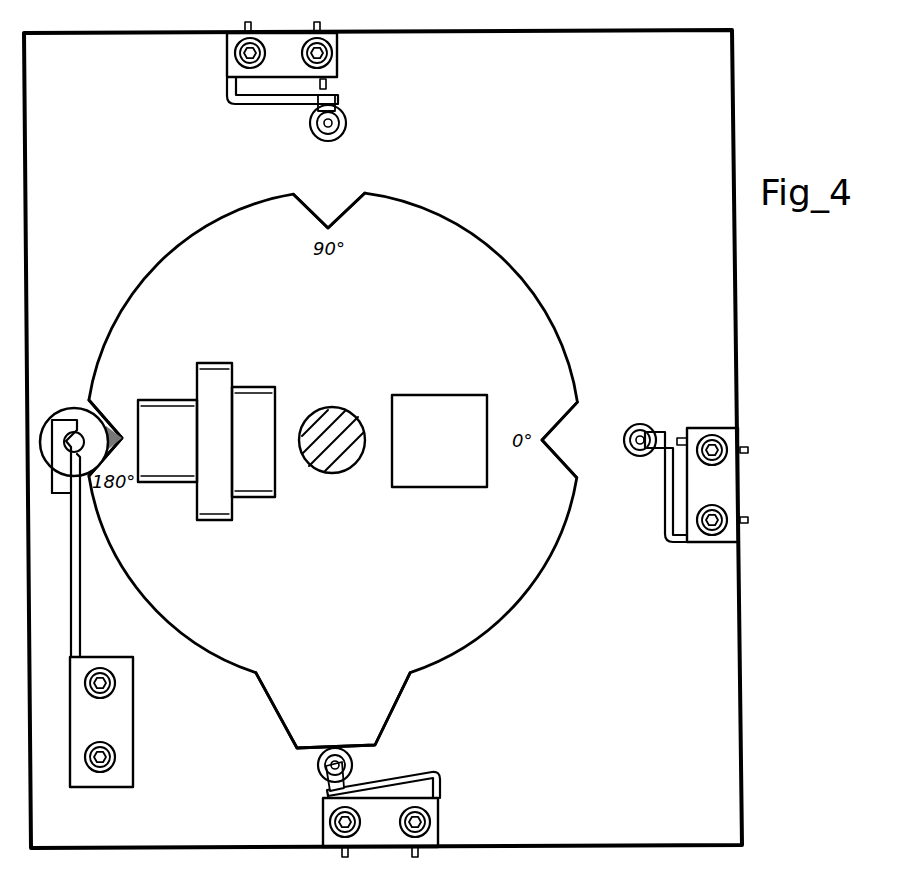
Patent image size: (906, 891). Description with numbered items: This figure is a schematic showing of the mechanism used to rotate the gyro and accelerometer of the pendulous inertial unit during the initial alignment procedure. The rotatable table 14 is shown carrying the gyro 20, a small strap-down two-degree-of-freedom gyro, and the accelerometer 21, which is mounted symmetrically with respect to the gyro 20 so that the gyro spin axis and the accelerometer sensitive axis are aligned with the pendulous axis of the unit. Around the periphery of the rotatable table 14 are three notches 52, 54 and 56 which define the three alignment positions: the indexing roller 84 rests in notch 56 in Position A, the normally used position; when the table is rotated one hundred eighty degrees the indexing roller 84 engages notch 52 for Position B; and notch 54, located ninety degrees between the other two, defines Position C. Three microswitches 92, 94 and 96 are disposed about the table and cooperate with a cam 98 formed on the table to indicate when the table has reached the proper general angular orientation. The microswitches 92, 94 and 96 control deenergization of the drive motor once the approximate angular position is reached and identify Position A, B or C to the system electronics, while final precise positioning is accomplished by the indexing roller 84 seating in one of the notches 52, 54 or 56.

The rotatable table 14 is at (232, 620).
The gyro 20 is at (180, 456).
The accelerometer 21 is at (447, 454).
The notch 52 is at (574, 418).
The notch 54 is at (354, 200).
The notch 56 is at (118, 430).
The indexing roller 84 is at (70, 408).
The microswitch 92 is at (422, 772).
The microswitch 94 is at (665, 537).
The microswitch 96 is at (255, 105).
The cam 98 is at (373, 705).